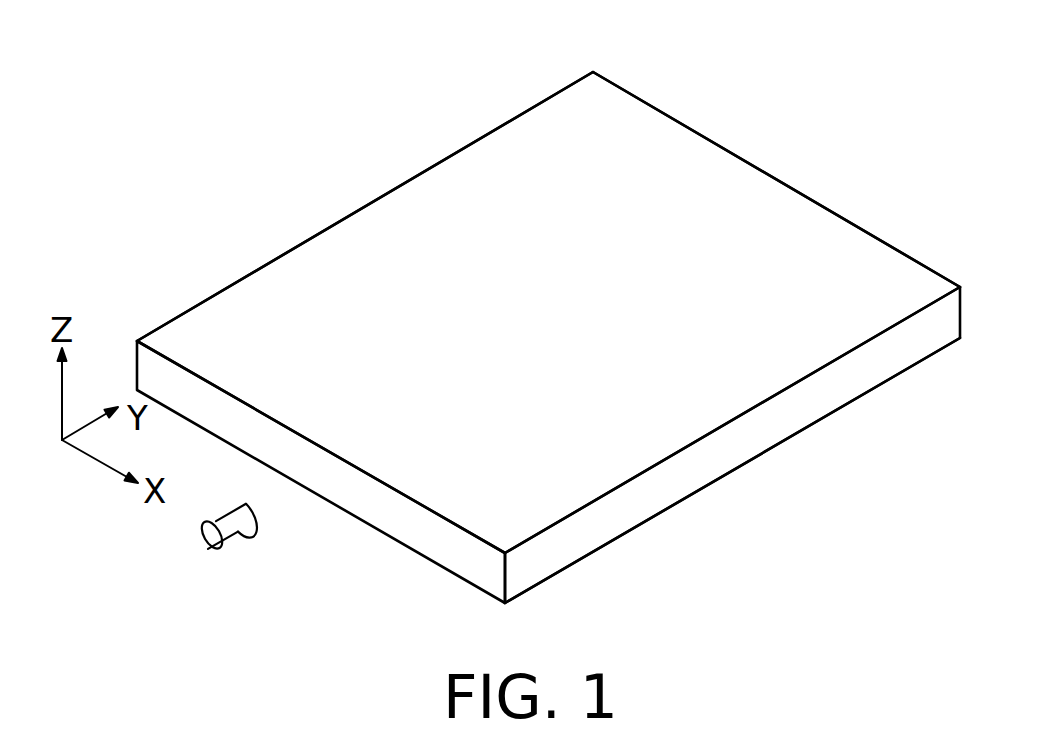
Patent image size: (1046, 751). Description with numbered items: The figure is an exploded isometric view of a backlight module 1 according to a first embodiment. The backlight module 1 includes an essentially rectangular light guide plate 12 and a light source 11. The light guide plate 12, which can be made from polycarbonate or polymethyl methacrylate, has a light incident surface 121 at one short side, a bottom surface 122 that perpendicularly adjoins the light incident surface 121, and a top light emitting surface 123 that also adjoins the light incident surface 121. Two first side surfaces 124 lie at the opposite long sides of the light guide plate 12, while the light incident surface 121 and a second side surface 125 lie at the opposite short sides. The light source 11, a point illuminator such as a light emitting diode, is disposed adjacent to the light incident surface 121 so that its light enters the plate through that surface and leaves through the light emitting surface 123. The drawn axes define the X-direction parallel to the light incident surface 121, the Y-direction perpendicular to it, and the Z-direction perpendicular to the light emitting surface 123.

The backlight module 1 is at (512, 47).
The light source 11 is at (215, 535).
The light guide plate 12 is at (548, 350).
The light incident surface 121 is at (380, 523).
The bottom surface 122 is at (672, 512).
The light emitting surface 123 is at (293, 277).
The first side surfaces 124 is at (188, 306).
The second side surface 125 is at (832, 205).